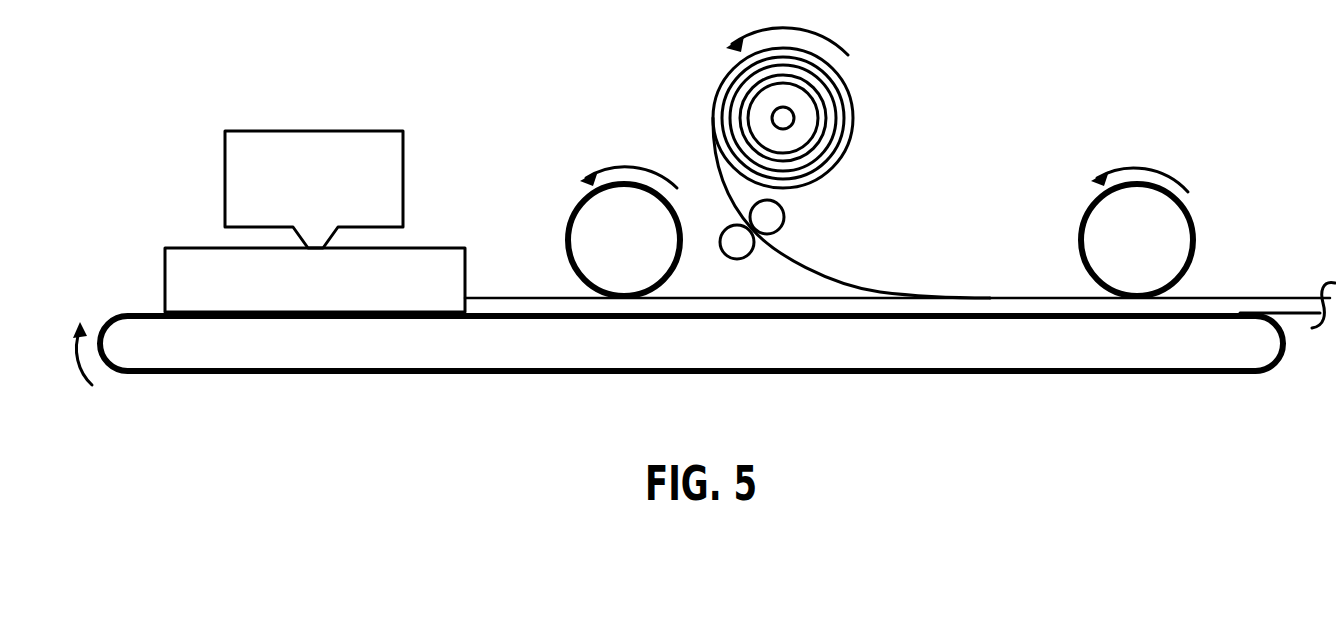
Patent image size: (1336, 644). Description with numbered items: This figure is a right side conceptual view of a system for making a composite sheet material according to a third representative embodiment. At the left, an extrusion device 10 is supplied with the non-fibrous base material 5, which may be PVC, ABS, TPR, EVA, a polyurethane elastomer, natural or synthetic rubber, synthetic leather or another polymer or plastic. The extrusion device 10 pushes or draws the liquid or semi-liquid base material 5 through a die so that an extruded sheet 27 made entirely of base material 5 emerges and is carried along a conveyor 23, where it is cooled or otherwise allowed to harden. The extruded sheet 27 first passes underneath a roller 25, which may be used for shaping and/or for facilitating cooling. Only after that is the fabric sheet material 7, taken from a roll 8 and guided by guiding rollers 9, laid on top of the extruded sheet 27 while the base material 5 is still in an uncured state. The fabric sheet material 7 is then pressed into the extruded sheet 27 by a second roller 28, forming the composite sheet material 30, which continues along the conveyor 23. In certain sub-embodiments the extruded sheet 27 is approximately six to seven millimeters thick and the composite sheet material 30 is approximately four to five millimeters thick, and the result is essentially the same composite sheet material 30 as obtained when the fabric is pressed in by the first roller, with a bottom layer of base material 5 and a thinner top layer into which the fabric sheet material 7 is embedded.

The base material 5 is at (403, 189).
The fabric sheet material 7 is at (932, 296).
The roll 8 is at (855, 121).
The guiding rollers 9 is at (720, 237).
The extrusion device 10 is at (164, 277).
The conveyor 23 is at (982, 343).
The roller 25 is at (566, 239).
The extruded sheet 27 is at (545, 307).
The roller 28 is at (1197, 241).
The composite sheet material 30 is at (1225, 298).